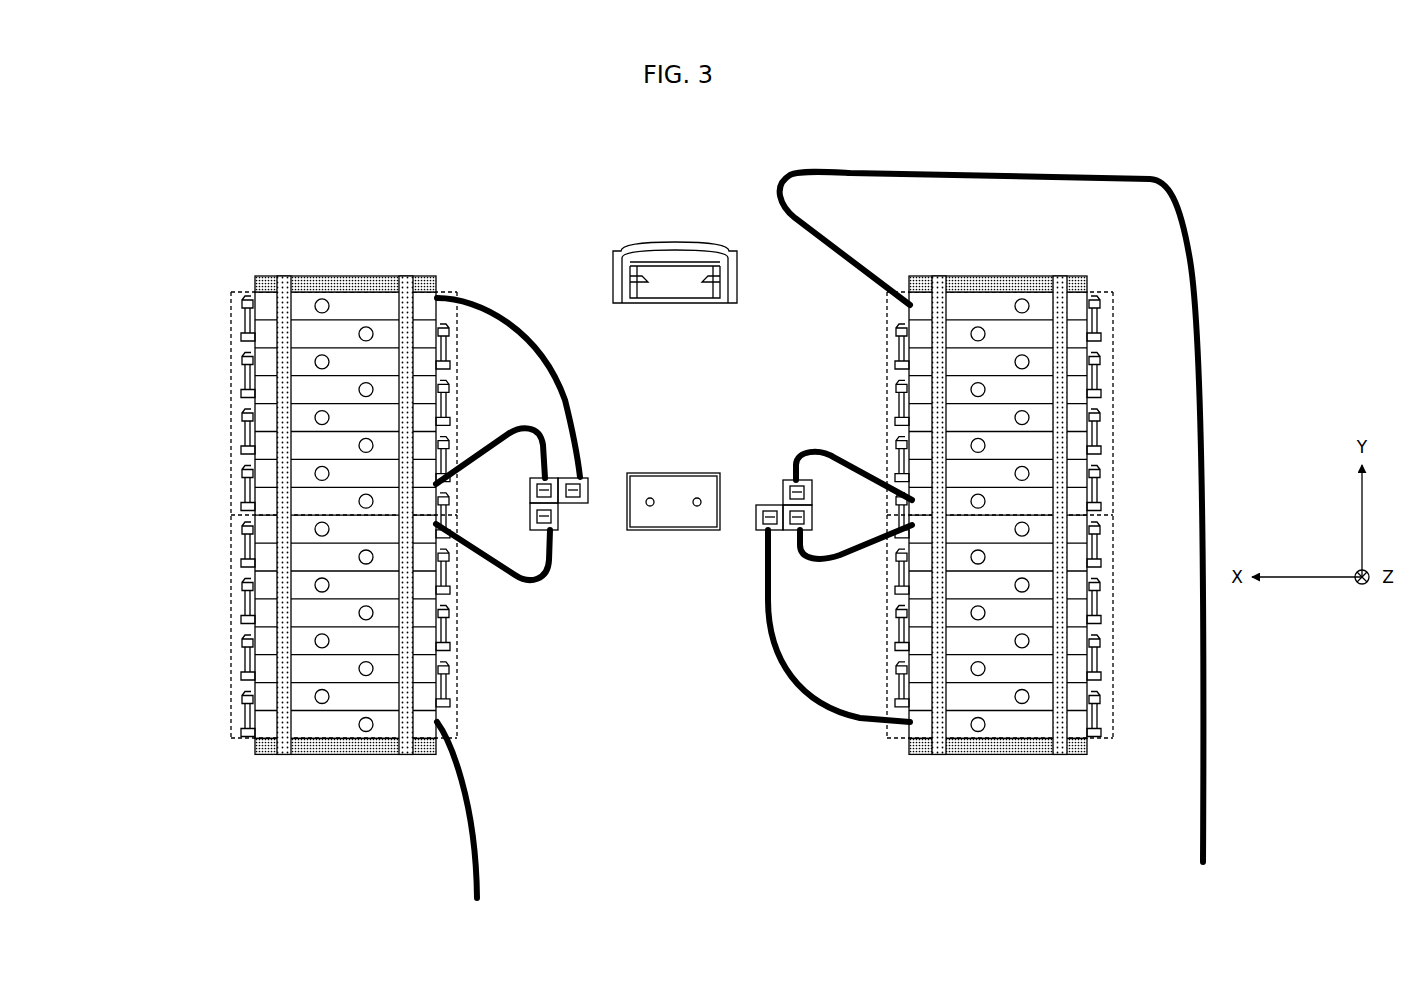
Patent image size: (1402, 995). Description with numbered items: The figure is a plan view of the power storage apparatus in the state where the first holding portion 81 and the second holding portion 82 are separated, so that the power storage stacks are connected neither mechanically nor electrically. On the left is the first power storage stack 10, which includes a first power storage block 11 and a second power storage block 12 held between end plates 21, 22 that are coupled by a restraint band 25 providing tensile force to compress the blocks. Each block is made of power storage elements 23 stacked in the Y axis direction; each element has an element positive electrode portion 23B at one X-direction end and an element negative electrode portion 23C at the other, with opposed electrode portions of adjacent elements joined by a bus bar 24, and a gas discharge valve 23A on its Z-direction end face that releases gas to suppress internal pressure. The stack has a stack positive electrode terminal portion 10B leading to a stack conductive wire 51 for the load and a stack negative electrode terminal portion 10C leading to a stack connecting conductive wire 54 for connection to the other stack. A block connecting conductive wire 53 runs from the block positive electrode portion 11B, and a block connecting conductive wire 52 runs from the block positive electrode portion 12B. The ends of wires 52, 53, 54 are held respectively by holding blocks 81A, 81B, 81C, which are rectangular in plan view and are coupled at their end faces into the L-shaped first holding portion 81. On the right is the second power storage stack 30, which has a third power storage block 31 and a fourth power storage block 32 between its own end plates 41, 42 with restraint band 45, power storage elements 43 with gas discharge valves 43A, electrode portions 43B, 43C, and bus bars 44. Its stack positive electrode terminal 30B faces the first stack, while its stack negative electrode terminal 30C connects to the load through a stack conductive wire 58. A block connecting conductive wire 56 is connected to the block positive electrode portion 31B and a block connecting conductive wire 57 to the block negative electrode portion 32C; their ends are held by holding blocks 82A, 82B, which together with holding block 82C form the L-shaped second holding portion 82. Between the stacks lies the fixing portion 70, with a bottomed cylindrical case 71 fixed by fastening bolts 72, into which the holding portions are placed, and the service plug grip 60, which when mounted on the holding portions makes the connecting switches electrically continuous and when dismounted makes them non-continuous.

The first power storage stack 10 is at (388, 259).
The stack positive electrode terminal portion 10B is at (445, 720).
The stack negative electrode terminal portion 10C is at (440, 296).
The first power storage block 11 is at (455, 305).
The block positive electrode portion 11B is at (449, 473).
The second power storage block 12 is at (462, 680).
The block positive electrode portion 12B is at (450, 524).
The end plate 21 is at (312, 290).
The end plate 22 is at (342, 745).
The power storage element 23 is at (330, 730).
The gas discharge valve 23A is at (370, 730).
The element positive electrode portion 23B is at (244, 692).
The element negative electrode portion 23C is at (253, 735).
The bus bar 24 is at (253, 705).
The restraint band 25 is at (283, 385).
The second power storage stack 30 is at (956, 259).
The stack positive electrode terminal 30B is at (905, 718).
The stack negative electrode terminal 30C is at (905, 298).
The third power storage block 31 is at (896, 353).
The block positive electrode portion 31B is at (905, 472).
The fourth power storage block 32 is at (895, 670).
The block negative electrode portion 32C is at (905, 527).
The upper end plate 41 is at (1033, 292).
The lower end plate 42 is at (1005, 745).
The battery cell 43 is at (1025, 733).
The safety valve 43A is at (978, 735).
The positive electrode terminal 43B is at (1102, 698).
The negative electrode terminal 43C is at (1102, 735).
The bus bar 44 is at (1102, 715).
The restraining band 45 is at (1058, 385).
The stack conductive wire 51 is at (470, 790).
The block connecting conductive wire 52 is at (497, 568).
The block connecting conductive wire 53 is at (513, 432).
The stack connecting conductive wire 54 is at (540, 345).
The block connecting conductive wire 56 is at (850, 460).
The block connecting conductive wire 57 is at (853, 560).
The stack conductive wire 58 is at (1205, 300).
The service plug grip 60 is at (622, 270).
The fixing portion 70 is at (675, 544).
The case 71 is at (645, 528).
The fastening bolt 72 is at (696, 498).
The first holding portion 81 is at (584, 474).
The holding block 81A is at (530, 512).
The holding block 81B is at (535, 478).
The holding block 81C is at (590, 477).
The second holding portion 82 is at (749, 503).
The holding block 82A is at (793, 480).
The holding block 82B is at (812, 517).
The holding block 82C is at (757, 522).